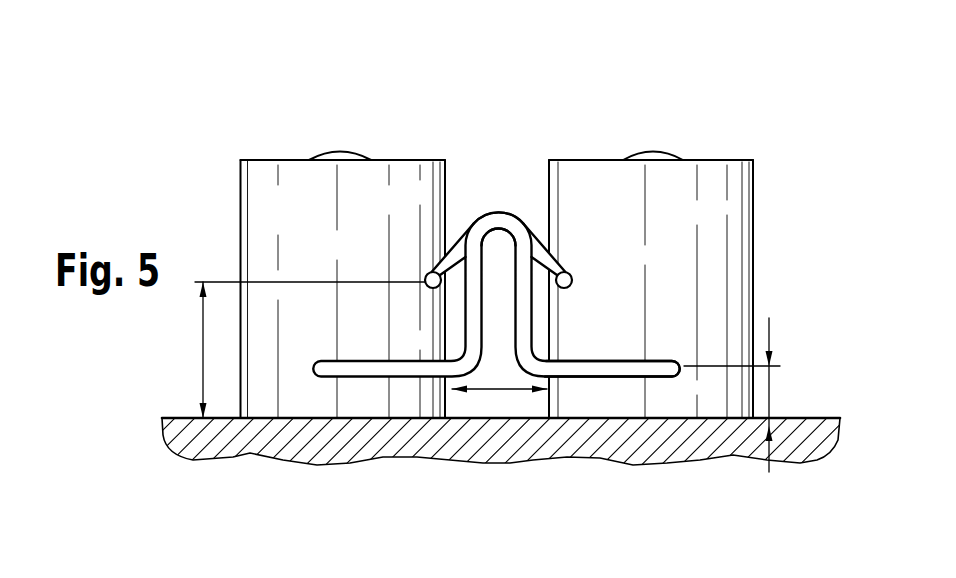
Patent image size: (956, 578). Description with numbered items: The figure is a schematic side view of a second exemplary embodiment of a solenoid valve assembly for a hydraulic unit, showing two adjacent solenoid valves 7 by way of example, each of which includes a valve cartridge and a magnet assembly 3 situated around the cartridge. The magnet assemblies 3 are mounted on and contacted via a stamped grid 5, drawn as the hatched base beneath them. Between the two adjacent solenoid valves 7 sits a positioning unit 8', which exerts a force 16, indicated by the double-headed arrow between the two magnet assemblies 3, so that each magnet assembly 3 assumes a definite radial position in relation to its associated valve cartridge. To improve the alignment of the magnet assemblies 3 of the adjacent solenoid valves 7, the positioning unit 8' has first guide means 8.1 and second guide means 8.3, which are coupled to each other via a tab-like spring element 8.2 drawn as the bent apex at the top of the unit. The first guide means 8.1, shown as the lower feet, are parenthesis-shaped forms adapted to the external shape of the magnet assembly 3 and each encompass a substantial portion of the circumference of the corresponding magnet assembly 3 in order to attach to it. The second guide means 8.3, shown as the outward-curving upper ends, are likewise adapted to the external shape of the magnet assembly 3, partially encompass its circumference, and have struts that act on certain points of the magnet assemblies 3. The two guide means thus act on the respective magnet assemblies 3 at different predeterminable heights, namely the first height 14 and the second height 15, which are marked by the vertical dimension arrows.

The magnet assembly 3 is at (262, 214).
The stamped grid 5 is at (686, 447).
The solenoid valve 7 is at (216, 130).
The positioning unit 8' is at (496, 206).
The first guide means 8.1 is at (631, 372).
The tab-like spring element 8.2 is at (499, 211).
The second guide means 8.3 is at (430, 272).
The first height 14 is at (769, 393).
The second height 15 is at (203, 349).
The force 16 is at (505, 391).